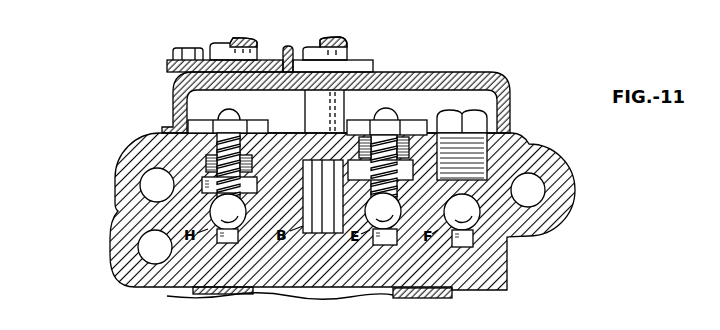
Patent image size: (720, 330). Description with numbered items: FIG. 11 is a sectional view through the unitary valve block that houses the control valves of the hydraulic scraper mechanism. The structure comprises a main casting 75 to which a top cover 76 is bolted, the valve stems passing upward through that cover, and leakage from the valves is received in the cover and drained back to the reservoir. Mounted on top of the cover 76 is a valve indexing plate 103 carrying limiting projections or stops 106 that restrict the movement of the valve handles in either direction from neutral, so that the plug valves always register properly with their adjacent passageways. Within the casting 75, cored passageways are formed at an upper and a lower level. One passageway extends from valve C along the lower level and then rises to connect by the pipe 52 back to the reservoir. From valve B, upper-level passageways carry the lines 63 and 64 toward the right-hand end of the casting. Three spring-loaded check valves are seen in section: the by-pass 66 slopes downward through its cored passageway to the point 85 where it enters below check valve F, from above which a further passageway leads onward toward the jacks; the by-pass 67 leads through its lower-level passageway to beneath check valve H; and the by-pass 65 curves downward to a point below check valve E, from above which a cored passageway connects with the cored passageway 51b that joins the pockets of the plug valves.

The valve indexing plate 103 is at (167, 62).
The limiting projections or stops 106 is at (289, 47).
The top cover 76 is at (463, 72).
The main casting 75 is at (117, 242).
The line 64 is at (157, 185).
The pipe 52 is at (155, 247).
The line 63 is at (528, 190).
The cored passageway 51b' 51b is at (302, 163).
The by-pass 65 is at (354, 177).
The by-pass 66 is at (461, 153).
The by-pass 67 is at (228, 228).
The point 85 is at (462, 229).